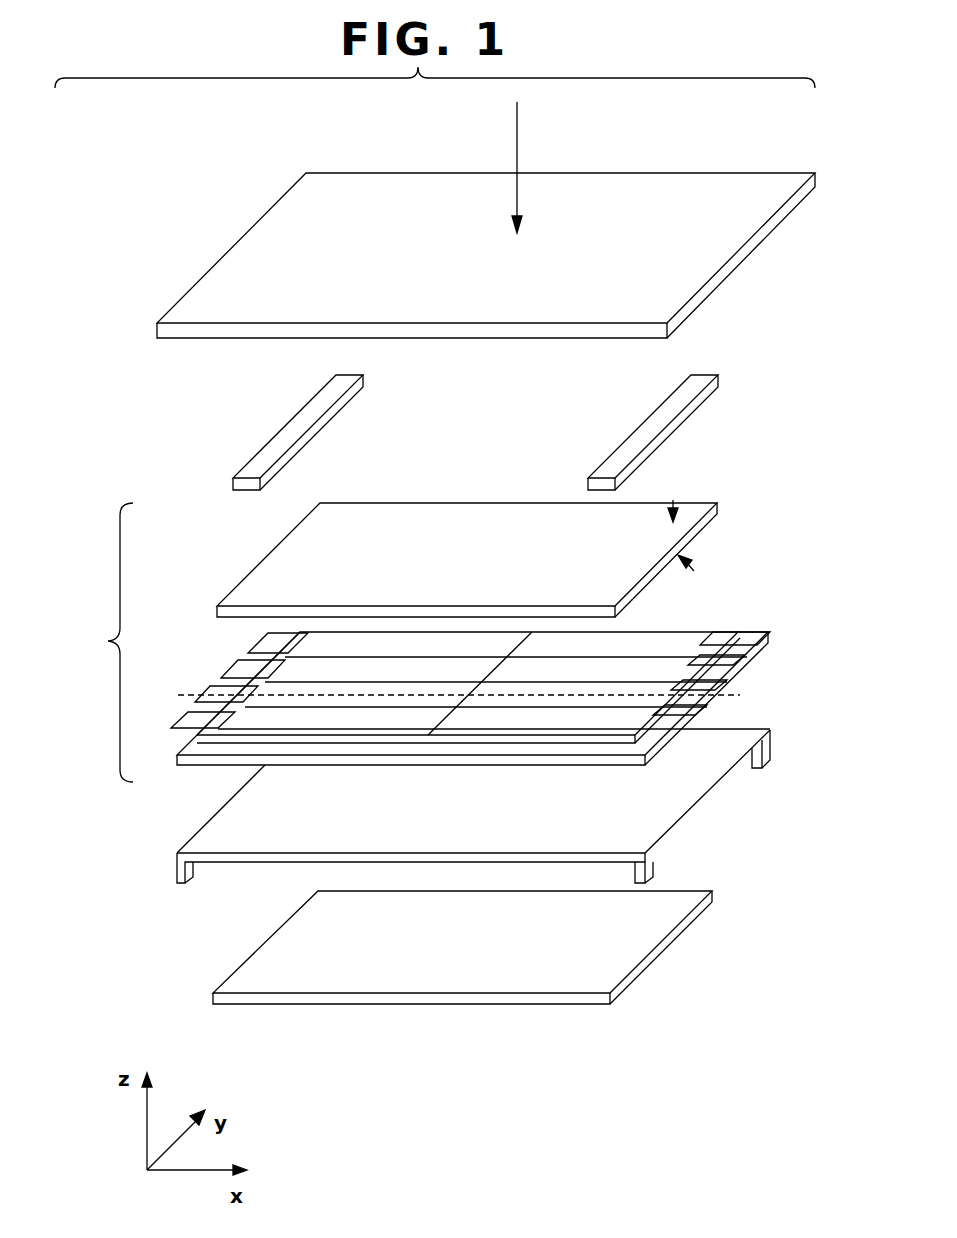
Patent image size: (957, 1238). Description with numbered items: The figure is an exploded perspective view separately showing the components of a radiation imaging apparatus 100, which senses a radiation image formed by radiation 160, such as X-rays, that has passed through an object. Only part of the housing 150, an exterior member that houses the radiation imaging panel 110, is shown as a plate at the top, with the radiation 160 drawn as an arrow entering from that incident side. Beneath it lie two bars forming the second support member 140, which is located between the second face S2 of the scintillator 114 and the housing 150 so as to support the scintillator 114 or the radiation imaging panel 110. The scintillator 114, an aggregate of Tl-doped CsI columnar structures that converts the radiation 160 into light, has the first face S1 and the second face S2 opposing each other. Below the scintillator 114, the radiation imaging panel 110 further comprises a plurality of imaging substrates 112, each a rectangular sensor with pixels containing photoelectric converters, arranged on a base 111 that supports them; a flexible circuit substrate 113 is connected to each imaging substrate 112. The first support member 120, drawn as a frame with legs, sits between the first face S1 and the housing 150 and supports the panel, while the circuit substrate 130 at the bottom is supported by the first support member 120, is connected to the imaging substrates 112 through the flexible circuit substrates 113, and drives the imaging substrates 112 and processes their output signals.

The radiation imaging apparatus 100 is at (606, 1075).
The radiation imaging panel 110 is at (452, 639).
The base 111 is at (205, 765).
The imaging substrate 112 is at (654, 640).
The flexible circuit substrate 113 is at (762, 645).
The scintillator 114 is at (700, 530).
The first support member 120 is at (685, 830).
The circuit substrate 130 is at (632, 985).
The second support member 140 is at (312, 430).
The housing 150 is at (740, 265).
The radiation 160 is at (517, 140).
The first face S1 is at (694, 571).
The second face S2 is at (673, 500).